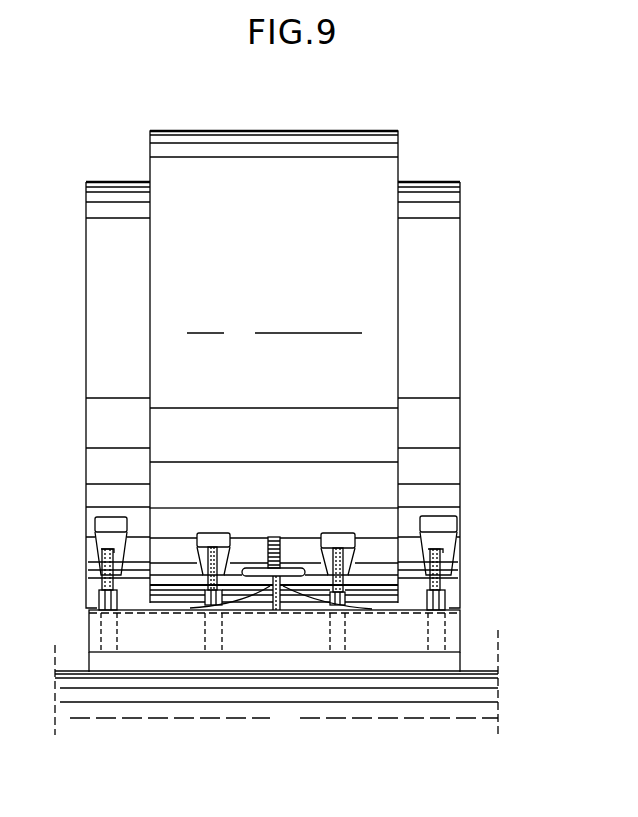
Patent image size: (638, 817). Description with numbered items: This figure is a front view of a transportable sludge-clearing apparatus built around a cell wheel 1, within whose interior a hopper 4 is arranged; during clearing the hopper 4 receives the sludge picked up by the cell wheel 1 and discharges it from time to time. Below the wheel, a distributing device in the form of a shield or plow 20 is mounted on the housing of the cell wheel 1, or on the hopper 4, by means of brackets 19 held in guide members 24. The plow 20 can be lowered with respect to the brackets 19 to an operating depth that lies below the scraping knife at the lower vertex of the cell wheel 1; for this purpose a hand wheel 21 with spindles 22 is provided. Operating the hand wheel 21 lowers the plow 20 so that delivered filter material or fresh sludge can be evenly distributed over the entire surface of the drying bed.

The cell wheel 1 is at (382, 162).
The hopper 4 is at (440, 236).
The brackets 19 is at (100, 524).
The plow 20 is at (446, 623).
The hand wheel 21 is at (256, 568).
The spindles 22 is at (276, 539).
The guide members 24 is at (106, 566).